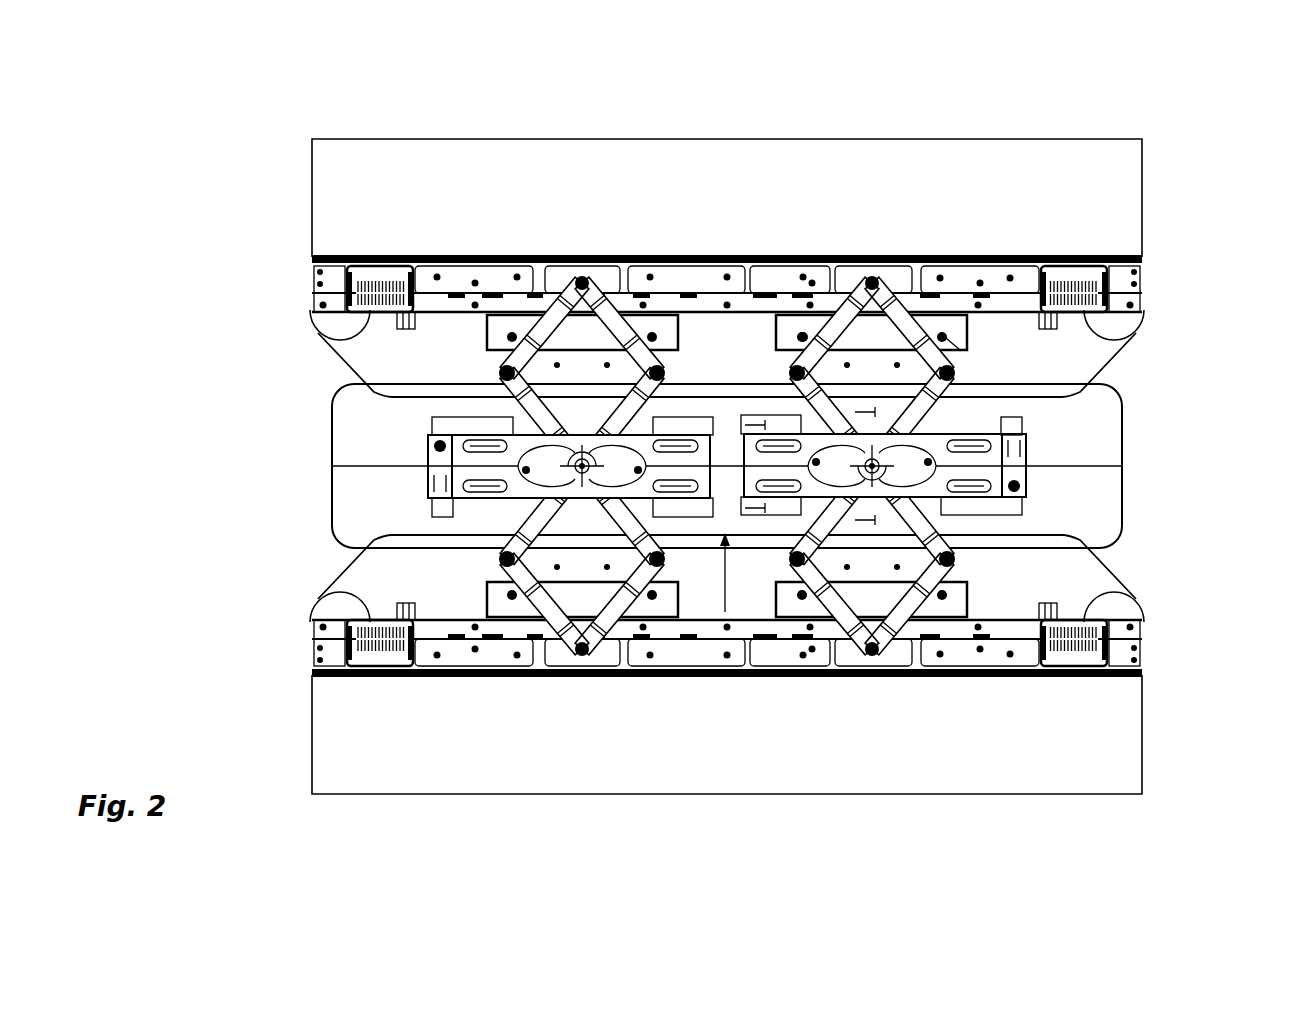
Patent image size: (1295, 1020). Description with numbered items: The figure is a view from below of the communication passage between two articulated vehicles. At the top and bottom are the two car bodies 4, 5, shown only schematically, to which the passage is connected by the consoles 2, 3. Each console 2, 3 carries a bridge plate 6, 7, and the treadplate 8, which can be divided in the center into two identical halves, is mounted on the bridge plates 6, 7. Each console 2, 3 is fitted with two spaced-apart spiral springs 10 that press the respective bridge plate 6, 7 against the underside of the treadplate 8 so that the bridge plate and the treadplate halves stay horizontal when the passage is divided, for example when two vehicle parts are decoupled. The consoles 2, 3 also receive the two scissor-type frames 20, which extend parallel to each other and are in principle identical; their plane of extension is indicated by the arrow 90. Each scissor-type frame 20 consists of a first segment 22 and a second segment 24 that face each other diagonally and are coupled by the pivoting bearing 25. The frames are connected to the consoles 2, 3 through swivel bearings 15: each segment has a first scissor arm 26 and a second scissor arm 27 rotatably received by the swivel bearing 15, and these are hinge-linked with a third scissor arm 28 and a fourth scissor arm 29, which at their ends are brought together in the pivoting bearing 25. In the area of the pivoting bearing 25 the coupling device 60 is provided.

The console 2 is at (1145, 655).
The console 3 is at (1140, 270).
The car body 4 is at (1120, 184).
The car body 5 is at (1113, 745).
The bridge plate 6 is at (1082, 580).
The bridge plate 7 is at (1083, 358).
The treadplate 8 is at (322, 491).
The spiral spring 10 is at (312, 332).
The swivel bearing 15 is at (582, 278).
The scissor-type frame 20 is at (506, 407).
The first segment 22 is at (968, 366).
The second segment 24 is at (532, 323).
The pivoting bearing 25 is at (437, 495).
The first scissor arm 26 is at (805, 330).
The second scissor arm 27 is at (955, 345).
The third scissor arm 28 is at (832, 423).
The fourth scissor arm 29 is at (955, 397).
The coupling device 60 is at (418, 444).
The arrow 90 is at (745, 683).